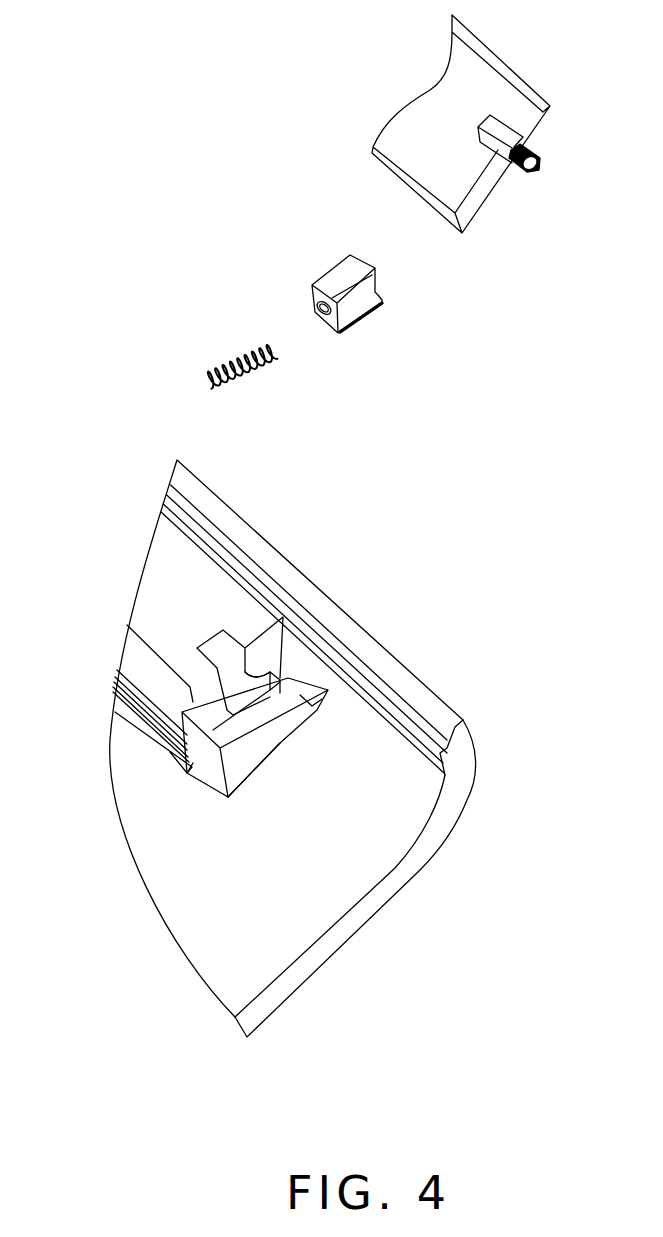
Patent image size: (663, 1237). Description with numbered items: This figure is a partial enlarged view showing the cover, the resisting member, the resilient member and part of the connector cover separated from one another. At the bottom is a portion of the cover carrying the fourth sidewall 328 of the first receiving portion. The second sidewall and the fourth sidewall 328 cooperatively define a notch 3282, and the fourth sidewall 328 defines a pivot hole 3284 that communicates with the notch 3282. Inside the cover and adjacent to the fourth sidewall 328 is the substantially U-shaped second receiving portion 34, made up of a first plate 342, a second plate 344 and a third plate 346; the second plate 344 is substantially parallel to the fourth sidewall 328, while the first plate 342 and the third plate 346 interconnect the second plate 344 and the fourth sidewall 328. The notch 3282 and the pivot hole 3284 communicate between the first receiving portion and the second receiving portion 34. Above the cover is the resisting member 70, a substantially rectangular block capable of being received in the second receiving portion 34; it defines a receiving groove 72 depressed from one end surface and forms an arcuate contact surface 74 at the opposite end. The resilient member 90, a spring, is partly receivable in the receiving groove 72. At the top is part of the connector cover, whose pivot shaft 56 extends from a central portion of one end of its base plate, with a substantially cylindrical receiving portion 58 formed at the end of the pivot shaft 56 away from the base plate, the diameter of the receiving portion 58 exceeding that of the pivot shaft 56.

The second receiving portion 34 is at (213, 677).
The pivot shaft 56 is at (505, 140).
The receiving portion 58 is at (533, 150).
The resisting member 70 is at (332, 282).
The receiving groove 72 is at (325, 308).
The contact surface 74 is at (382, 288).
The resilient member 90 is at (217, 367).
The fourth sidewall 328 is at (212, 697).
The first plate 342 is at (207, 750).
The second plate 344 is at (253, 740).
The third plate 346 is at (320, 693).
The notch 3282 is at (228, 662).
The pivot hole 3284 is at (240, 690).